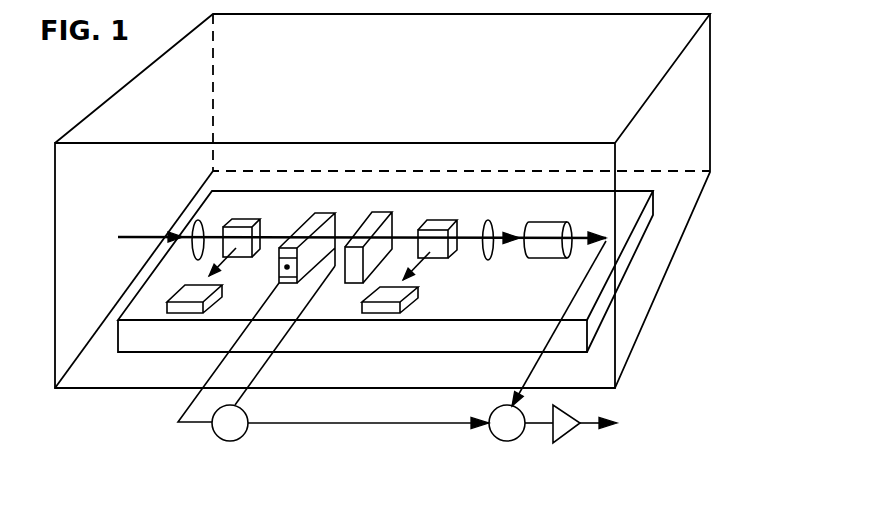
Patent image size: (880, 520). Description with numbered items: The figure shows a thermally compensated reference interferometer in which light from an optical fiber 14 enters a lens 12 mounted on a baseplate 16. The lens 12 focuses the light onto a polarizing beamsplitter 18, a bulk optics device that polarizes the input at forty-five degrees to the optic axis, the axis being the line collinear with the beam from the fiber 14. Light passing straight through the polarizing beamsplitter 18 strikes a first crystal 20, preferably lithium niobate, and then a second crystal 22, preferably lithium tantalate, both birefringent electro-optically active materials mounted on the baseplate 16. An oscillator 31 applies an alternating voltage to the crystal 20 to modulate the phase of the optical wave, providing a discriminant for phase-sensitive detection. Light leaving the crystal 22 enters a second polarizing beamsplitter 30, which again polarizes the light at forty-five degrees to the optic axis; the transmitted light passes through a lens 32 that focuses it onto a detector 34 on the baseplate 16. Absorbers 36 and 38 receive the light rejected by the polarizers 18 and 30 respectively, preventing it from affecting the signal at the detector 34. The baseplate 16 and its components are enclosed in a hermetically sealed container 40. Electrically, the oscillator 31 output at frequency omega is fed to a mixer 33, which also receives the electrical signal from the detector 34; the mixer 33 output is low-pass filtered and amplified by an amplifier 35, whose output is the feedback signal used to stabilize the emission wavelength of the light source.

The lens 12 is at (195, 259).
The optical fiber 14 is at (140, 235).
The baseplate 16 is at (118, 335).
The polarizing beamsplitter 18 is at (240, 218).
The first crystal 20 is at (296, 233).
The second crystal 22 is at (392, 225).
The second polarizing beamsplitter 30 is at (428, 259).
The oscillator 31 is at (212, 432).
The lens 32 is at (490, 259).
The mixer 33 is at (507, 443).
The detector 34 is at (562, 223).
The amplifier 35 is at (568, 437).
The absorber 36 is at (170, 297).
The absorber 38 is at (403, 303).
The hermetically sealed container 40 is at (680, 240).